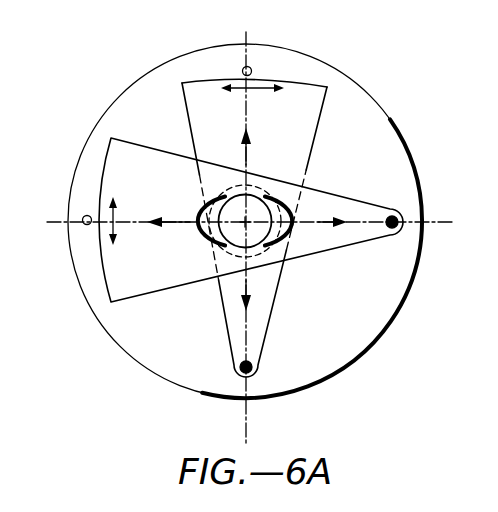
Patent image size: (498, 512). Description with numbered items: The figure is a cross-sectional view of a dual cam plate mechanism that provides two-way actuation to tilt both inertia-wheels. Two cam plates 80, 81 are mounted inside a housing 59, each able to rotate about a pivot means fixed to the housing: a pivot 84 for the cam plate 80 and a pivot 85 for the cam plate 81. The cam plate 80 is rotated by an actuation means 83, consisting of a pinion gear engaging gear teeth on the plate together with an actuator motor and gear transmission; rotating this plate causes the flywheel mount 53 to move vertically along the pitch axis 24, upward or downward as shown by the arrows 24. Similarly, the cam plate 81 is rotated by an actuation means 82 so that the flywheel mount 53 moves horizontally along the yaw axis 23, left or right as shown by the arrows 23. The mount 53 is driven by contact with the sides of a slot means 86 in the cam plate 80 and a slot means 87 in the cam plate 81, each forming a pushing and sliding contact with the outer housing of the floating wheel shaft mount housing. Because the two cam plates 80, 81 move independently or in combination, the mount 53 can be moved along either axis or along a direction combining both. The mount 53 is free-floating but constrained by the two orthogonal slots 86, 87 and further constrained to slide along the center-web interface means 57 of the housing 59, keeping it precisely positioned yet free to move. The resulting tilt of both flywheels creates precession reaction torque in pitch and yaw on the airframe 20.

The airframe 20 is at (366, 71).
The yaw axis 23 is at (318, 220).
The pitch axis 24 is at (247, 160).
The flywheel mount 53 is at (258, 232).
The center-web interface means 57 is at (338, 258).
The housing 59 is at (400, 121).
The cam plate 80 is at (150, 287).
The cam plate 81 is at (319, 113).
The actuation means 82 is at (250, 46).
The actuation means 83 is at (87, 214).
The pivot means 84 is at (396, 214).
The pivot means 85 is at (252, 375).
The slot means 86 is at (288, 200).
The slot means 87 is at (214, 198).